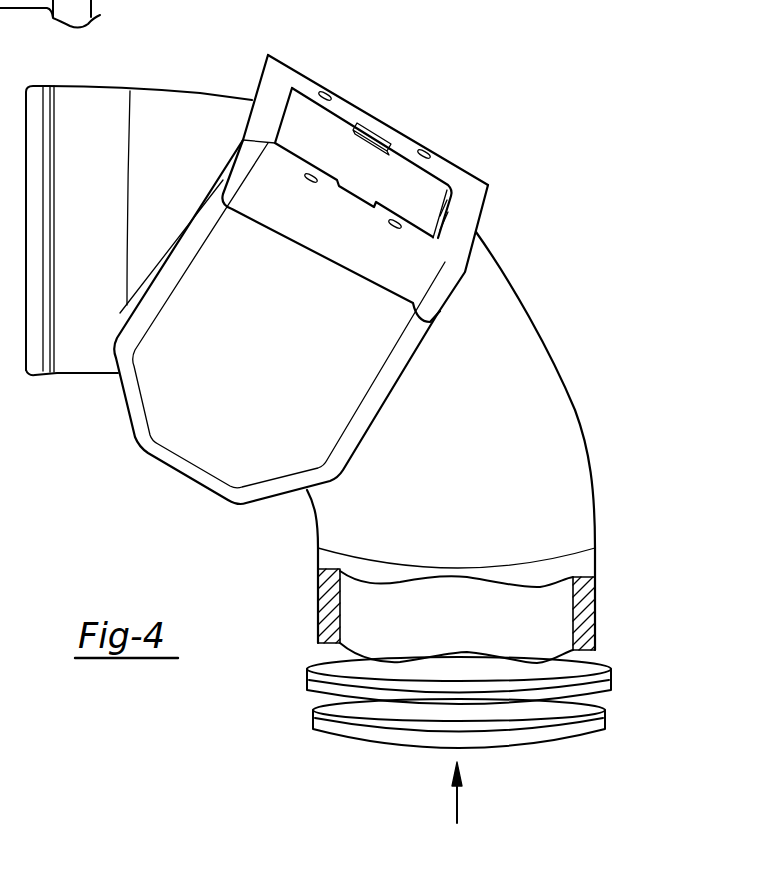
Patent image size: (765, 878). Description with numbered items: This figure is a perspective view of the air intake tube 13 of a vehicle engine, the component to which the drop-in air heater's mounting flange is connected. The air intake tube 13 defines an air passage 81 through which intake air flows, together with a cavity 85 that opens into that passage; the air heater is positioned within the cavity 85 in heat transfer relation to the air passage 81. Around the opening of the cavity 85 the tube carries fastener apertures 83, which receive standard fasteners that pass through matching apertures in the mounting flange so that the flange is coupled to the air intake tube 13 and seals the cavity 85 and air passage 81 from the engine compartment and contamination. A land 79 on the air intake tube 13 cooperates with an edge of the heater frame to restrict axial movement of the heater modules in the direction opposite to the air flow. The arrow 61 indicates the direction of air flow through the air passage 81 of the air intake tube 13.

The air intake tube 13 is at (530, 416).
The air flow direction 61 is at (457, 803).
The land 79 is at (468, 192).
The air passage 81 is at (443, 228).
The fastener apertures 83 is at (328, 90).
The cavity 85 is at (322, 128).